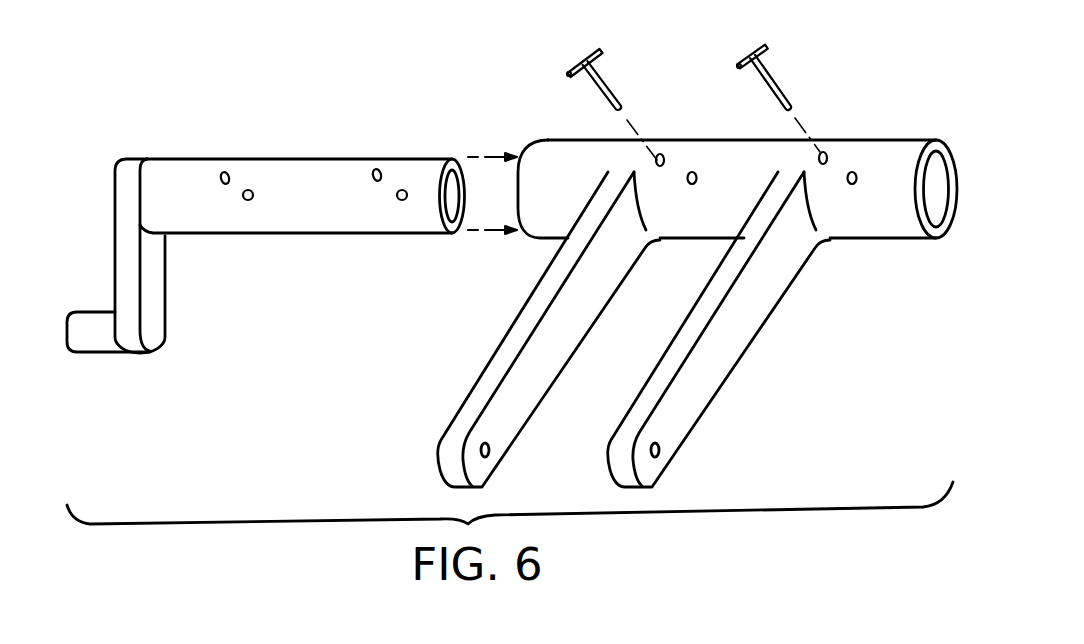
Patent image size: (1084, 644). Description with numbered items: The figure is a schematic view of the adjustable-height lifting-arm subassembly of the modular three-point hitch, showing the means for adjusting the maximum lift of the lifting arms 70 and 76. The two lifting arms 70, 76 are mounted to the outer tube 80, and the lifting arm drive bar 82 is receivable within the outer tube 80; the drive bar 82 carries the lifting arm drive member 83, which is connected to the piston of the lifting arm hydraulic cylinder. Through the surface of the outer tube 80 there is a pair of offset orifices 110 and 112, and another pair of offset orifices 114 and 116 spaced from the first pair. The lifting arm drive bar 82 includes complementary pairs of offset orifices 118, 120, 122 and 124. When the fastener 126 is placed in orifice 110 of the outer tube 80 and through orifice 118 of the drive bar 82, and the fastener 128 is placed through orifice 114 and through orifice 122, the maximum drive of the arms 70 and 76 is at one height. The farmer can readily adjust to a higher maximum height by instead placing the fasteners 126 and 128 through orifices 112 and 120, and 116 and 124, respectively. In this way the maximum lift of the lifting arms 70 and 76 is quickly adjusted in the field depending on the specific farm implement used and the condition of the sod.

The lifting arm 70 is at (730, 384).
The lifting arm 76 is at (491, 352).
The outer tube 80 is at (527, 240).
The lifting arm drive bar 82 is at (312, 233).
The lifting arm drive member 83 is at (105, 353).
The offset orifice 110 is at (662, 153).
The offset orifice 112 is at (690, 185).
The offset orifice 114 is at (828, 150).
The offset orifice 116 is at (853, 185).
The offset orifice 118 is at (223, 171).
The offset orifice 120 is at (251, 189).
The offset orifice 122 is at (377, 168).
The offset orifice 124 is at (405, 189).
The fastener 126 is at (607, 82).
The fastener 128 is at (776, 78).